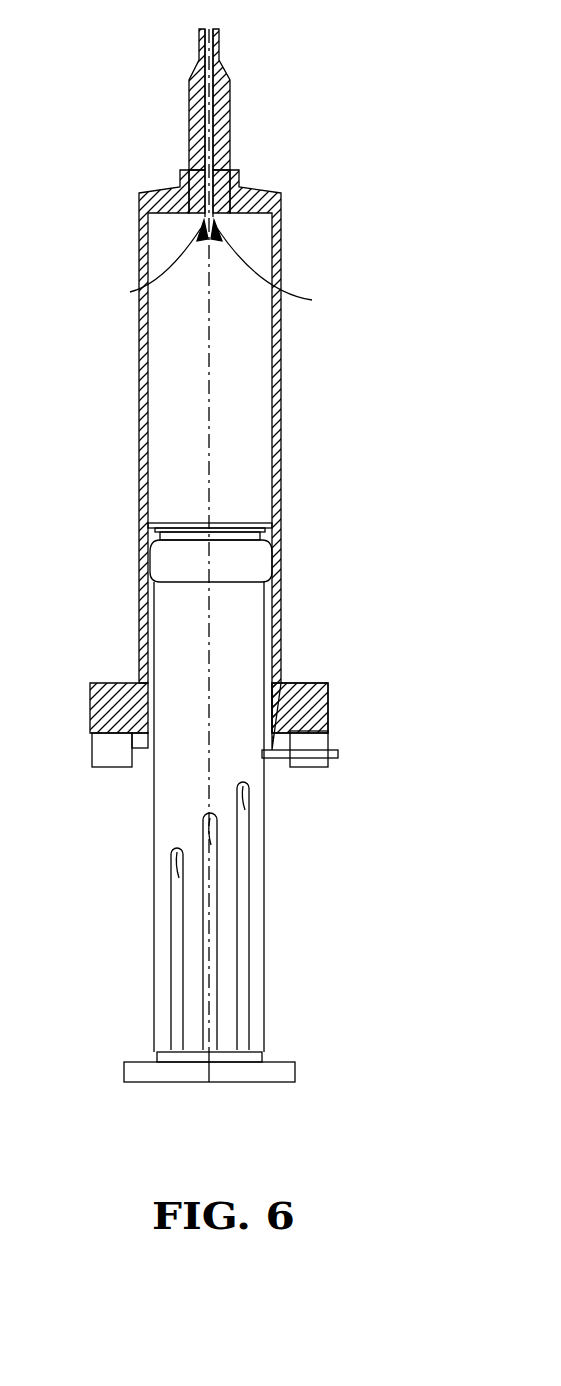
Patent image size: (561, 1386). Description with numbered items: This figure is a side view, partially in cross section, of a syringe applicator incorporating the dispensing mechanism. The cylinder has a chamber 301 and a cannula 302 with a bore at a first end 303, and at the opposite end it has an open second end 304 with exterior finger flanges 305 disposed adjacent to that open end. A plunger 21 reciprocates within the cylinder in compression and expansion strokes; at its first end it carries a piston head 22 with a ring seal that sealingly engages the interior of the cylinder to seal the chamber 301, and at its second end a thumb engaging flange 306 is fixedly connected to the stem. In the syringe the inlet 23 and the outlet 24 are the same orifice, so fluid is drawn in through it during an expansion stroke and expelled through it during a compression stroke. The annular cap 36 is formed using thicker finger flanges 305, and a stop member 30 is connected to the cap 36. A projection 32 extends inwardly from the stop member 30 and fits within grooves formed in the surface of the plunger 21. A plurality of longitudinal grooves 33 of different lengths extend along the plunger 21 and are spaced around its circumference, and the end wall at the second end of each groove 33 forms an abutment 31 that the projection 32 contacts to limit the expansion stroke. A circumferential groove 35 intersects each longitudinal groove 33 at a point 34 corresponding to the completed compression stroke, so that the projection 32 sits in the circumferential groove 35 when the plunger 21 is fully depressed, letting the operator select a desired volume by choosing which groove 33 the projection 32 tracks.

The plunger 21 is at (153, 860).
The piston head 22 is at (240, 518).
The inlet 23 is at (283, 266).
The outlet 24 is at (136, 266).
The stop member 30 is at (330, 767).
The abutments 31 is at (263, 750).
The projection 32 is at (340, 753).
The longitudinal grooves 33 is at (170, 985).
The point 34 is at (405, 732).
The circumferential groove 35 is at (258, 1058).
The annular cap 36 is at (328, 693).
The chamber 301 is at (258, 360).
The cannula 302 is at (233, 110).
The first end 303 is at (200, 118).
The open second end 304 is at (152, 750).
The exterior finger flanges 305 is at (90, 700).
The thumb engaging flange 306 is at (165, 1073).